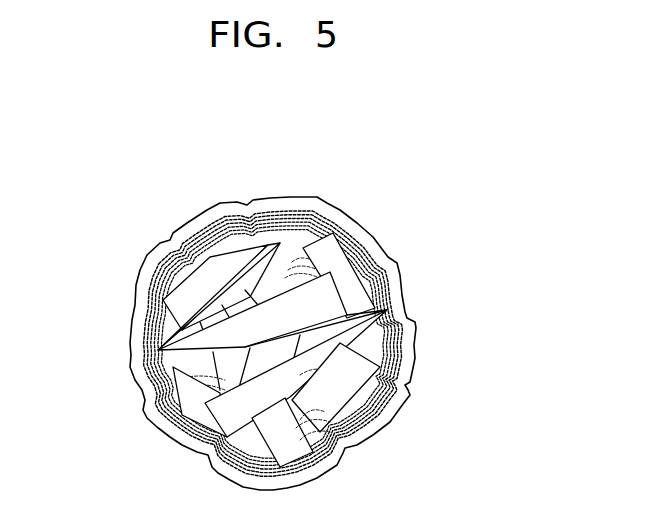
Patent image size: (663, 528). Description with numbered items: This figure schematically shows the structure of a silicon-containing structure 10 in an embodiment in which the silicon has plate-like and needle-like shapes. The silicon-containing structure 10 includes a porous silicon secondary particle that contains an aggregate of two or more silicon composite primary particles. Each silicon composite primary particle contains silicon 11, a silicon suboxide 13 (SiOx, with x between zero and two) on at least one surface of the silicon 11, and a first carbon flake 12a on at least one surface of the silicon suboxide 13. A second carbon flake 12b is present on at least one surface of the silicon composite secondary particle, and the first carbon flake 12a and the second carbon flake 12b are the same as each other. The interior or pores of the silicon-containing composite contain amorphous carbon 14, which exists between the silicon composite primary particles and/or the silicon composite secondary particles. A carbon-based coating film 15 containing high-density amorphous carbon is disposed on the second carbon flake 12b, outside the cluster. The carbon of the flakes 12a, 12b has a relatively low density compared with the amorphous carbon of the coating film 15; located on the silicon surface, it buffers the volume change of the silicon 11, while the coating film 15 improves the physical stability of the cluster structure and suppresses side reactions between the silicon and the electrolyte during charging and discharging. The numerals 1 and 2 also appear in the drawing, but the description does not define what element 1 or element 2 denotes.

The cable 1 is at (350, 357).
The wrapping layer 2 is at (204, 232).
The silicon-containing structure 10 is at (460, 205).
The silicon 11 is at (330, 260).
The first carbon flake 12a is at (300, 232).
The second carbon flake 12b is at (378, 343).
The silicon suboxide 13 is at (166, 263).
The amorphous carbon 14 is at (290, 252).
The carbon-based coating film 15 is at (155, 349).